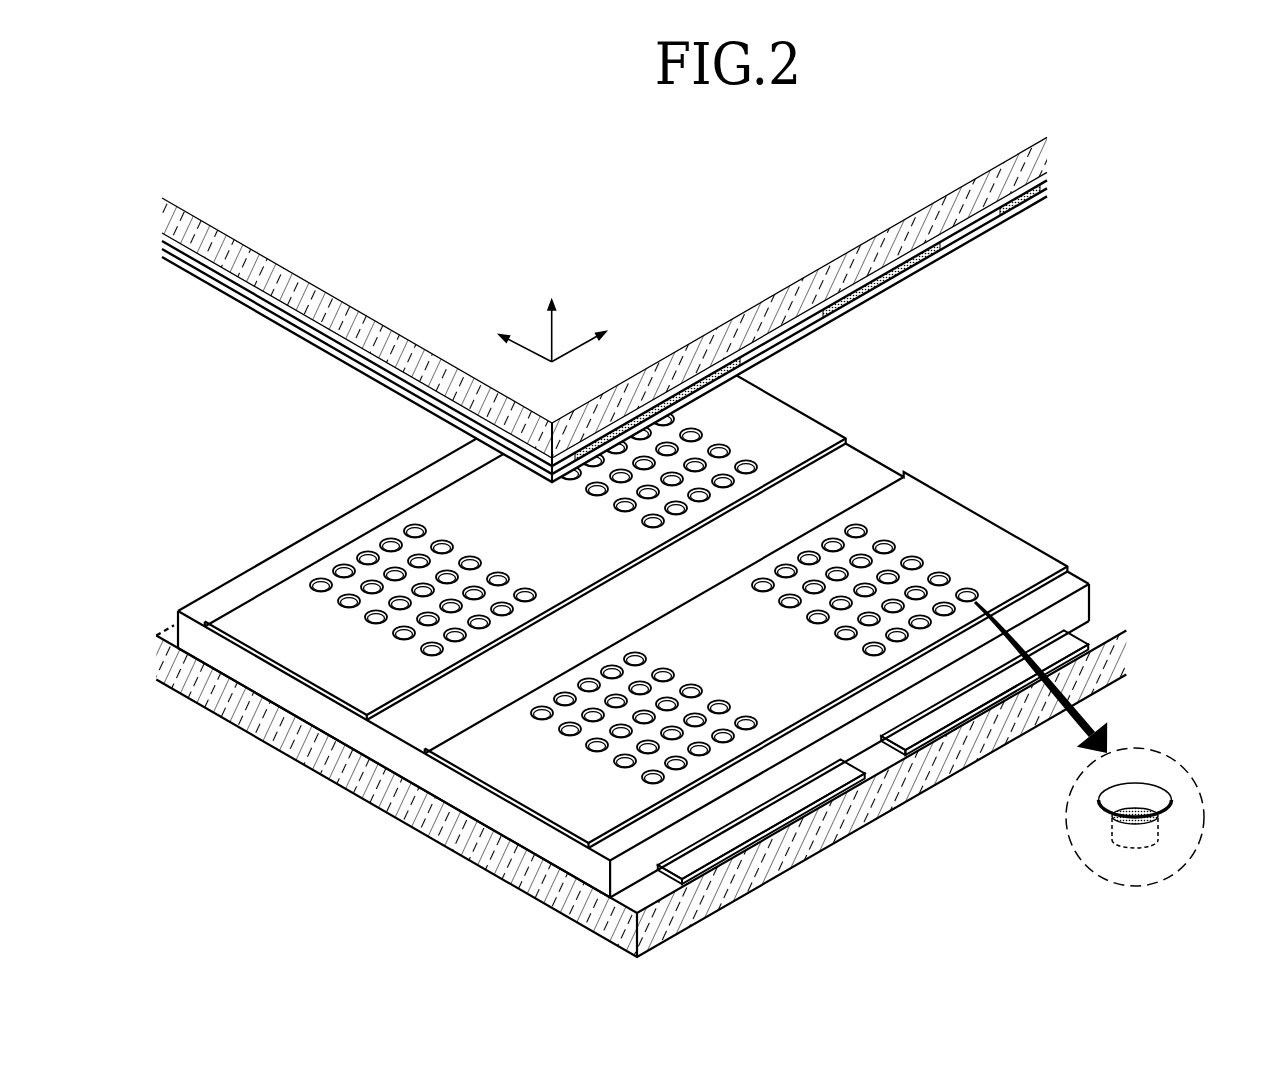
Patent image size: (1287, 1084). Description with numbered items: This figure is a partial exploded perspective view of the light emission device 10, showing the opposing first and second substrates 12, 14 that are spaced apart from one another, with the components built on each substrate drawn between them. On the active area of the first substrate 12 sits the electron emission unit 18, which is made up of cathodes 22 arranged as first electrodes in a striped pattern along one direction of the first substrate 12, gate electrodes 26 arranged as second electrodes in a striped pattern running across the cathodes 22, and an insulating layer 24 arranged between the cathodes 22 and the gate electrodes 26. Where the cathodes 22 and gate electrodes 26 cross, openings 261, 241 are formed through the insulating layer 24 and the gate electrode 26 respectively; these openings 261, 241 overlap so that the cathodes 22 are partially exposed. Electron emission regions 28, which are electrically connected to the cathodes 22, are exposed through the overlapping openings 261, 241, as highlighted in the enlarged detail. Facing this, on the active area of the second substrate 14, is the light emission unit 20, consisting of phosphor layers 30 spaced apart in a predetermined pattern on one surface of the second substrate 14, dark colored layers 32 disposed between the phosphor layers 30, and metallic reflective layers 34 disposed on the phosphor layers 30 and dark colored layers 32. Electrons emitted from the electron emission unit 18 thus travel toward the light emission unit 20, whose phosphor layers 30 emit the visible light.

The light emission device 10 is at (679, 213).
The first substrate 12 is at (547, 893).
The second substrate 14 is at (248, 270).
The electron emission unit 18 is at (663, 614).
The light emission unit 20 is at (612, 331).
The cathodes 22 is at (841, 777).
The insulating layer 24 is at (1080, 608).
The gate electrodes 26 is at (470, 755).
The electron emission regions 28 is at (1152, 820).
The phosphor layers 30 is at (937, 257).
The dark colored layers 32 is at (802, 328).
The metallic reflective layers 34 is at (1005, 223).
The opening 241 is at (1145, 806).
The opening 261 is at (1135, 784).